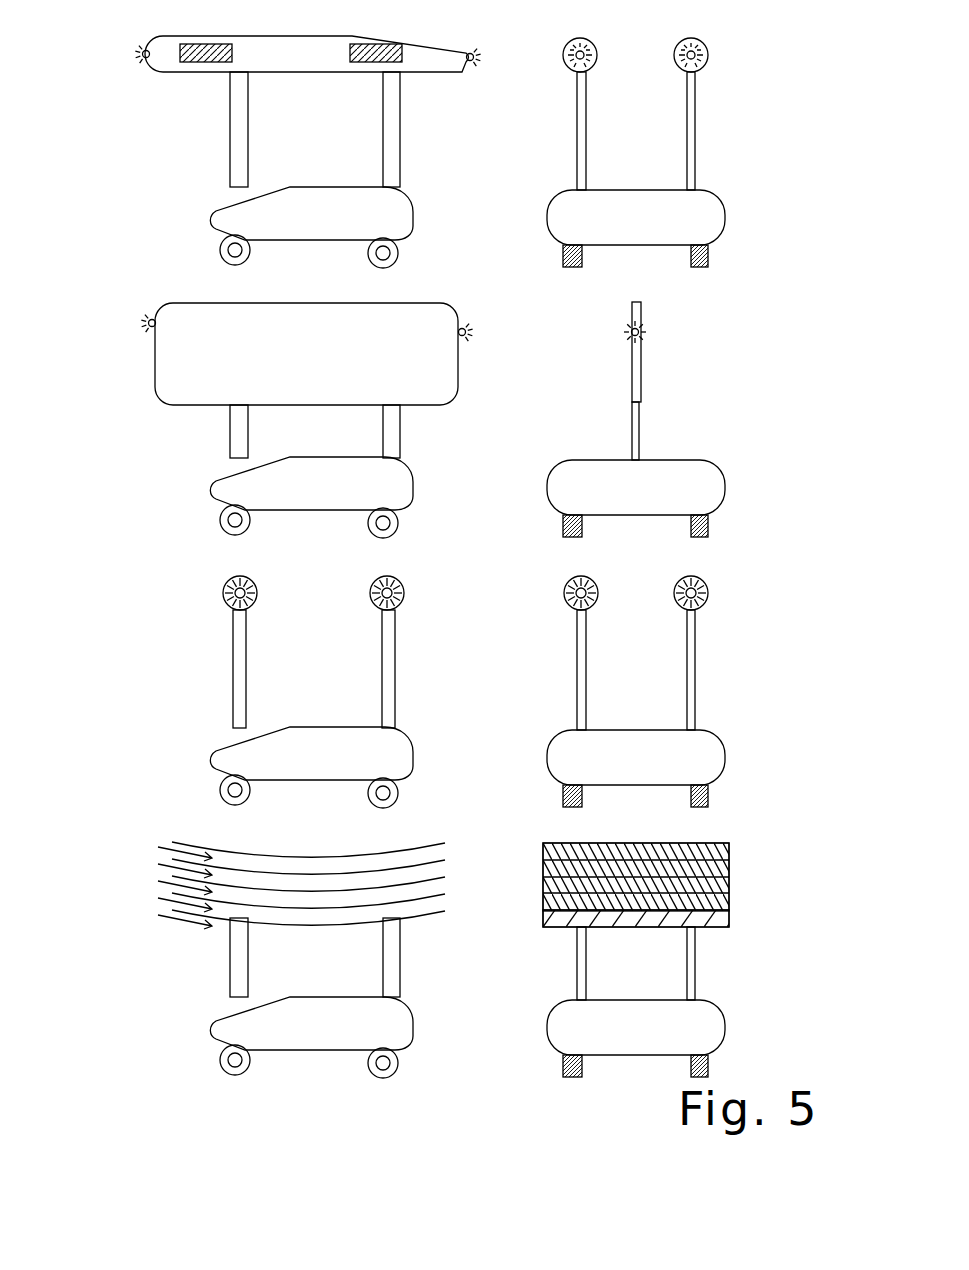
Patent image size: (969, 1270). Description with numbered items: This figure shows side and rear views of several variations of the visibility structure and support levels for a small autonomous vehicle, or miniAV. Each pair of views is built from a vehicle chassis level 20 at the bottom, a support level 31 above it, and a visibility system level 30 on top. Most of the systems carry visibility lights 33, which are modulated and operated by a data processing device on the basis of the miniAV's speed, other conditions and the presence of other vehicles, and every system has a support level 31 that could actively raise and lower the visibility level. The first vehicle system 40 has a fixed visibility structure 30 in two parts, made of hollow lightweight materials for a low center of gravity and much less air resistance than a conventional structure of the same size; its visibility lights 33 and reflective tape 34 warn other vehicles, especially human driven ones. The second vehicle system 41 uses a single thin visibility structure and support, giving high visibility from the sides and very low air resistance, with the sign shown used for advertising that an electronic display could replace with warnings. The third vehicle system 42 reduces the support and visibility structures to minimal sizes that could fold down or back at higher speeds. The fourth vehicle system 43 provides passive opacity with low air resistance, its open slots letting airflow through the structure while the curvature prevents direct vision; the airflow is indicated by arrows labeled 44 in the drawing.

The vehicle chassis level 20 is at (112, 268).
The visibility system level 30 is at (112, 42).
The support level 31 is at (97, 193).
The visibility lights 33 is at (144, 61).
The reflective tape 34 is at (208, 63).
The first vehicle system 40 is at (33, 32).
The second vehicle system 41 is at (35, 295).
The third vehicle system 42 is at (40, 572).
The fourth vehicle system 43 is at (52, 843).
The air flow arrows / awning 44 is at (157, 843).